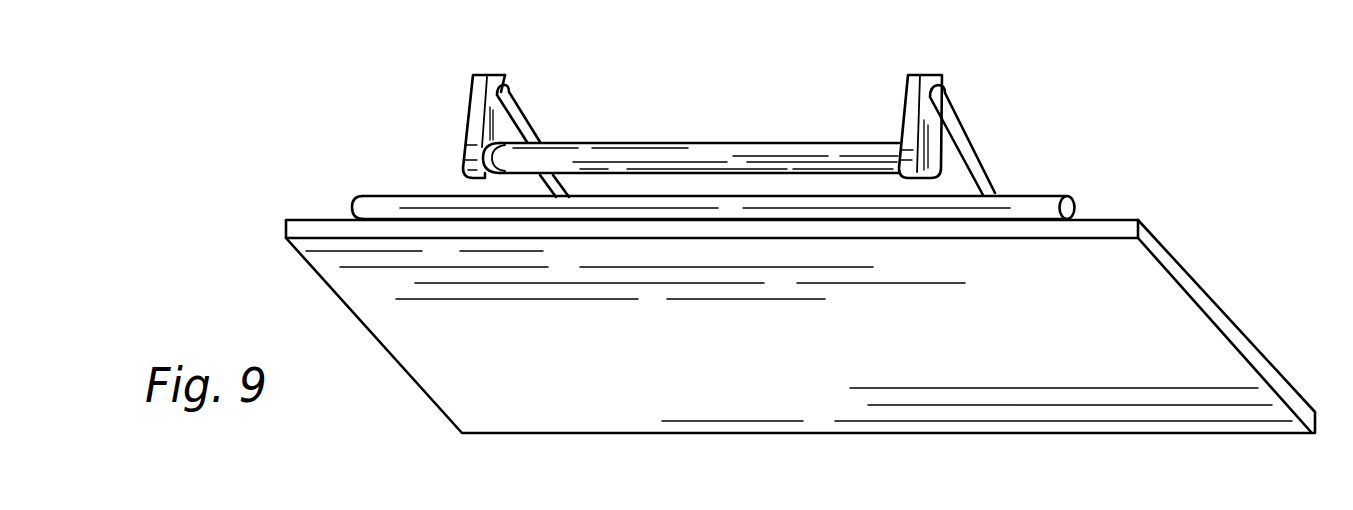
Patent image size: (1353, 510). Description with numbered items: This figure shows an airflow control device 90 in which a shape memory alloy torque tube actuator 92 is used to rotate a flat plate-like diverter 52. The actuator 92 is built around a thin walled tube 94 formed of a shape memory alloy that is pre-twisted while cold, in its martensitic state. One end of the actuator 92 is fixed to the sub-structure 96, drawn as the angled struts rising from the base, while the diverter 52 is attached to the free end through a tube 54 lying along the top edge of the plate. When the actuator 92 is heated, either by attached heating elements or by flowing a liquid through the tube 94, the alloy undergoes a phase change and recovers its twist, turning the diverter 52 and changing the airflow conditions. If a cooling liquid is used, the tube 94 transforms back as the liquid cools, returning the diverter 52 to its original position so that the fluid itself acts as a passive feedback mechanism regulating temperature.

The strut assembly 90 is at (403, 102).
The shape memory alloy torque tube actuator 92 is at (995, 112).
The thin walled tube 94 is at (700, 143).
The sub-structure 96 is at (990, 157).
The tube 54 is at (1037, 197).
The diverter 52 is at (1135, 308).